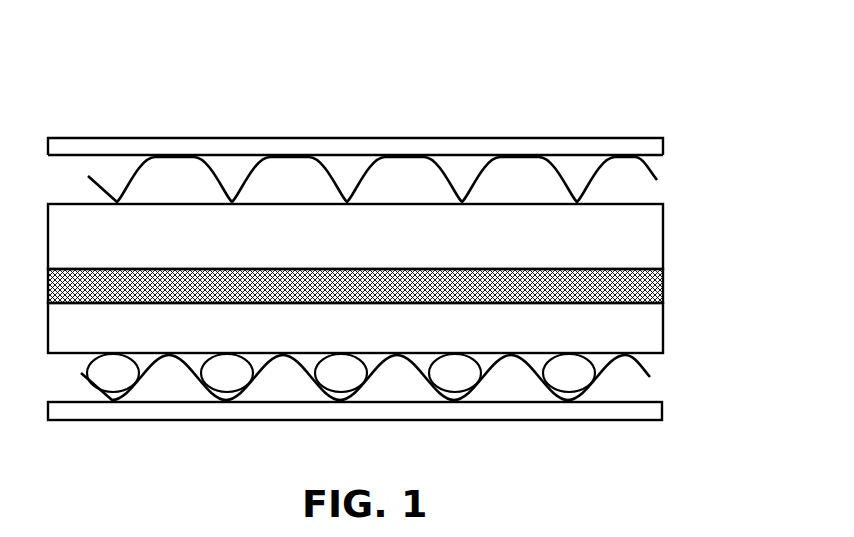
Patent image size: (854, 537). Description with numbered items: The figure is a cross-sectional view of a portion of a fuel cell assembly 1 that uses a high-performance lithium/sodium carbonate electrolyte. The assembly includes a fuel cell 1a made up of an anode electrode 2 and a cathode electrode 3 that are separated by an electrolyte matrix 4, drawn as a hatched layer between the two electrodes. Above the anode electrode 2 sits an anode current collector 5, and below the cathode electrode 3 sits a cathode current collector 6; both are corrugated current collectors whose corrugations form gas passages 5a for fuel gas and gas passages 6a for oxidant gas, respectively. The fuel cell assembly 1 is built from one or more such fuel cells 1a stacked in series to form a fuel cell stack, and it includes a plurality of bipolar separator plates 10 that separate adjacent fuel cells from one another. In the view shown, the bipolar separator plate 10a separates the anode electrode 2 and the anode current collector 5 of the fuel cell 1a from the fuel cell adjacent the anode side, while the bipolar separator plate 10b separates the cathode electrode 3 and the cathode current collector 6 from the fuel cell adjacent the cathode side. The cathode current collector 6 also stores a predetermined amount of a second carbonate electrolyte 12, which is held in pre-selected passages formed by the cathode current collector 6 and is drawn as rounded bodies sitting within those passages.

The fuel cell assembly 1 is at (452, 80).
The fuel cell 1a is at (722, 253).
The anode electrode 2 is at (652, 240).
The cathode electrode 3 is at (665, 328).
The electrolyte matrix 4 is at (665, 278).
The anode current collector 5 is at (656, 169).
The gas passages 5a is at (563, 172).
The cathode current collector 6 is at (655, 371).
The gas passages 6a is at (292, 382).
The bipolar separator plates 10 is at (598, 148).
The bipolar separator plate 10a is at (233, 147).
The bipolar separator plate 10b is at (648, 409).
The second carbonate electrolyte 12 is at (565, 366).